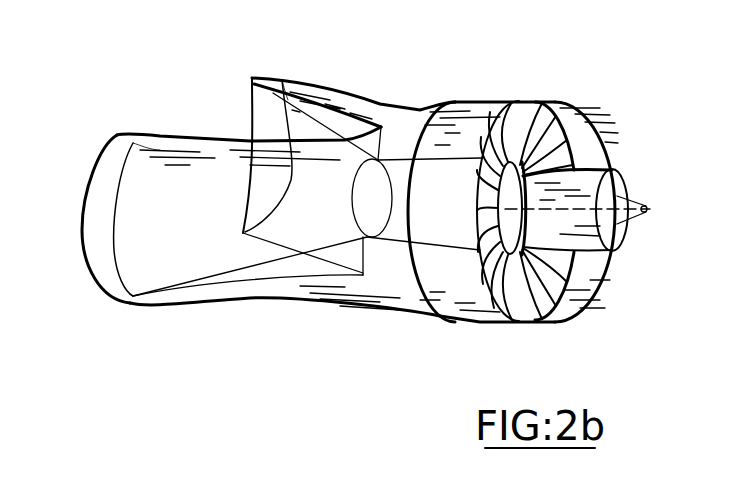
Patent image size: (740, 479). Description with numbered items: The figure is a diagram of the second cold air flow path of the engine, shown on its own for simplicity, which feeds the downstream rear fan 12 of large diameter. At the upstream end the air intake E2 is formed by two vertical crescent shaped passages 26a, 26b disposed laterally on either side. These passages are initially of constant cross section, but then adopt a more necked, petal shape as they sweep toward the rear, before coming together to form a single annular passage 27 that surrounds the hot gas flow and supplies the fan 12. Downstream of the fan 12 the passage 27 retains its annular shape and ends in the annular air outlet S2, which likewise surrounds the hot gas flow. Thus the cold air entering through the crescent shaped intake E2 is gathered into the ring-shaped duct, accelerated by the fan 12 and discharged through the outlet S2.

The rear fan 12 is at (520, 122).
The vertical crescent shaped passage 26a is at (273, 103).
The vertical crescent shaped passage 26b is at (112, 163).
The annular passage 27 is at (410, 127).
The air intake E2 is at (101, 208).
The annular air outlet S2 is at (590, 130).